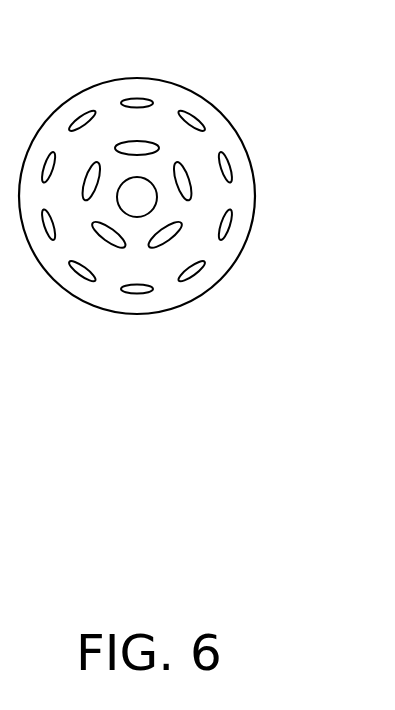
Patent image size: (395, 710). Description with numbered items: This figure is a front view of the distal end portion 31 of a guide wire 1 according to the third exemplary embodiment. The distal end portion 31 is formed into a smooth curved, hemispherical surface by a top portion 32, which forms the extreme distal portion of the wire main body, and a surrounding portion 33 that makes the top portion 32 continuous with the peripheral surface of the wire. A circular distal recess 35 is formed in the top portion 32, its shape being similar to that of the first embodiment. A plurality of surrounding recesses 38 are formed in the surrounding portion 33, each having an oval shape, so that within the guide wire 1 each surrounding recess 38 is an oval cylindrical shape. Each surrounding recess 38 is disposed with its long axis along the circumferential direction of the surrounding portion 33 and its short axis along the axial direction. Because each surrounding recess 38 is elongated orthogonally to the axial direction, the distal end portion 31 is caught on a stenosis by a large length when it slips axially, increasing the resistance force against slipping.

The guide wire 1 is at (234, 126).
The distal end portion 31 is at (222, 257).
The top portion 32 is at (138, 190).
The surrounding portion 33 is at (208, 197).
The distal recess 35 is at (122, 177).
The surrounding recesses 38 is at (200, 278).